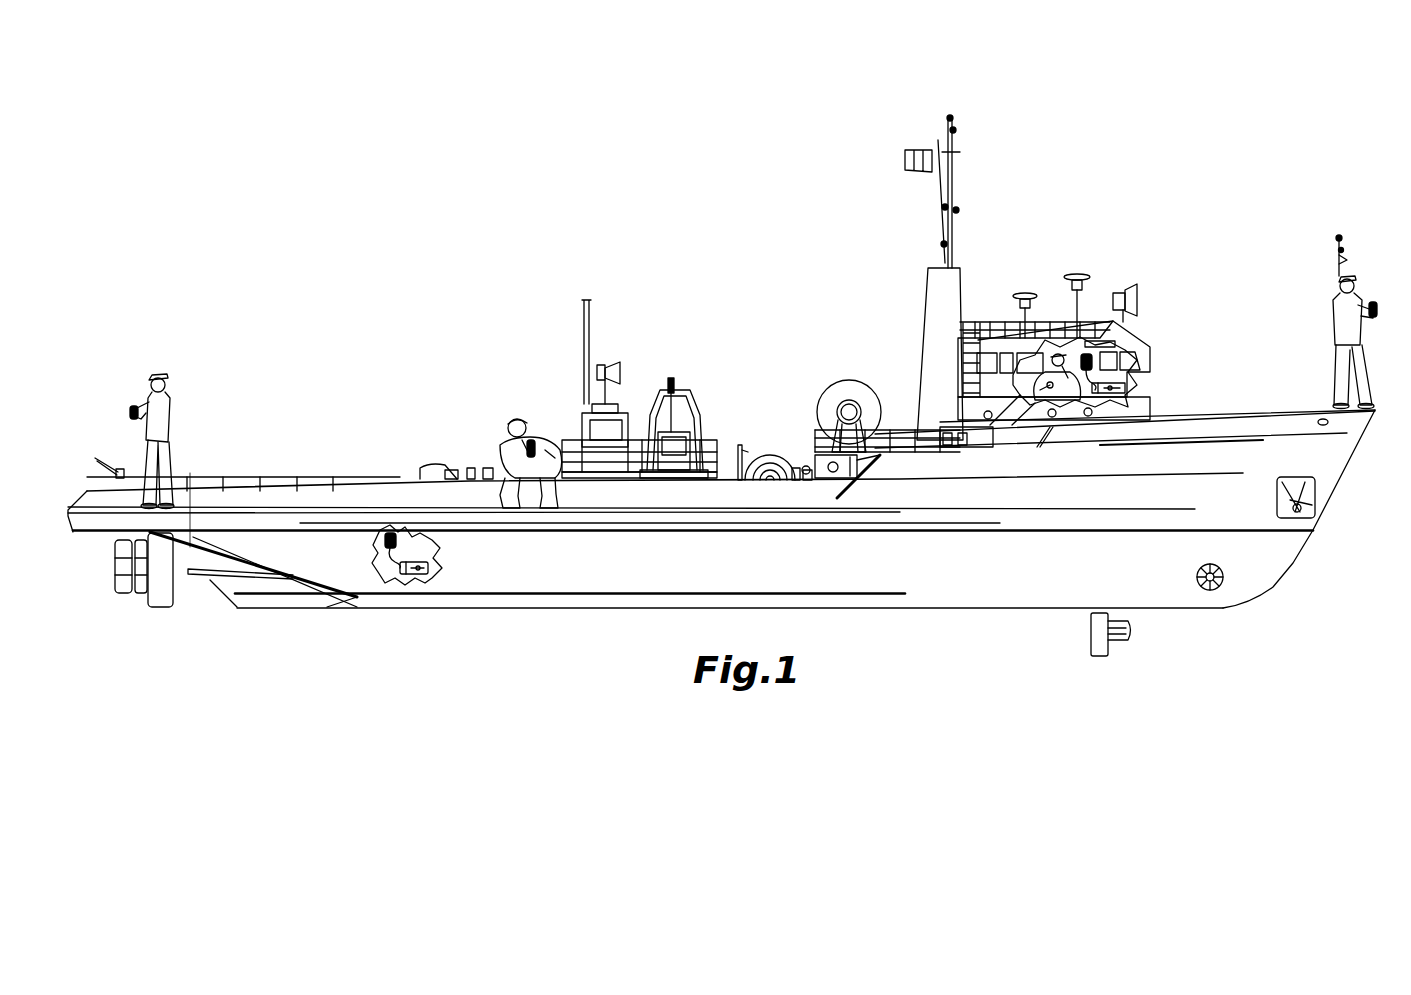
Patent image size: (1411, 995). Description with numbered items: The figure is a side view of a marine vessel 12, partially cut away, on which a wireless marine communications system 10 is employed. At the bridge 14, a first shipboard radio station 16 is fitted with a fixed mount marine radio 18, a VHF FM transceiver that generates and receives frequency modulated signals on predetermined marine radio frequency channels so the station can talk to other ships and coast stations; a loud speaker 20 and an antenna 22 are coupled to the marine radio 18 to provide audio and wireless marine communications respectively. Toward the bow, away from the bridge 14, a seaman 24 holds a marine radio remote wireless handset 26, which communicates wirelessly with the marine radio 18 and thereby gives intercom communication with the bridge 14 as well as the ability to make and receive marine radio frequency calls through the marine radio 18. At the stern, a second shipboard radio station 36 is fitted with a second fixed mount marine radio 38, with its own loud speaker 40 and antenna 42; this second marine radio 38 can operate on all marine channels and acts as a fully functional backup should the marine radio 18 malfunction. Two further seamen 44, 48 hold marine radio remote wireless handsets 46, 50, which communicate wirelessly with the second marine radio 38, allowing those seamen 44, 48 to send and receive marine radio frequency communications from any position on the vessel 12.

The wireless marine communications system 10 is at (1165, 176).
The marine vessel 12 is at (728, 473).
The bridge 14 is at (1142, 338).
The first shipboard radio station 16 is at (1104, 341).
The fixed mount marine radio frequency transceiver 18 is at (1150, 388).
The loud speaker 20 is at (1125, 297).
The antenna 22 is at (589, 327).
The seaman 24 is at (1367, 304).
The marine radio remote wireless handset 26 is at (1373, 302).
The second shipboard radio station 36 is at (398, 582).
The second fixed mount marine radio frequency transceiver 38 is at (420, 582).
The loud speaker 40 is at (620, 370).
The antenna 42 is at (582, 348).
The seaman 44 is at (527, 426).
The marine radio remote wireless handset 46 is at (531, 438).
The seaman 48 is at (142, 404).
The marine radio remote wireless handset 50 is at (132, 406).